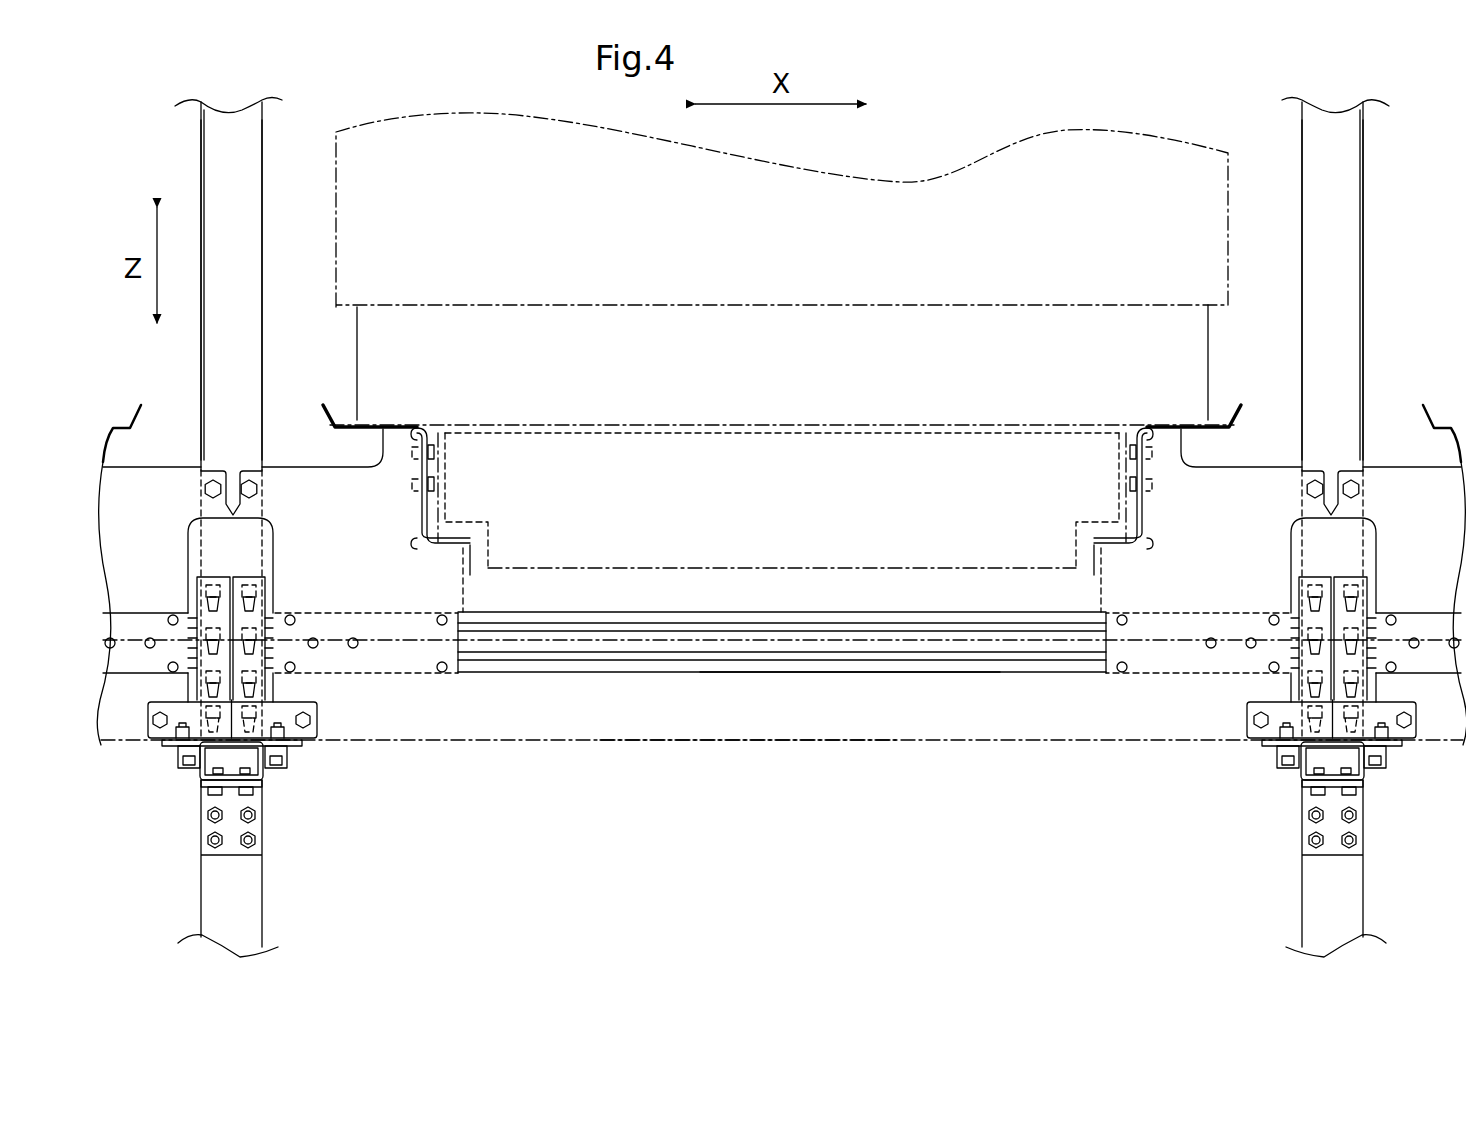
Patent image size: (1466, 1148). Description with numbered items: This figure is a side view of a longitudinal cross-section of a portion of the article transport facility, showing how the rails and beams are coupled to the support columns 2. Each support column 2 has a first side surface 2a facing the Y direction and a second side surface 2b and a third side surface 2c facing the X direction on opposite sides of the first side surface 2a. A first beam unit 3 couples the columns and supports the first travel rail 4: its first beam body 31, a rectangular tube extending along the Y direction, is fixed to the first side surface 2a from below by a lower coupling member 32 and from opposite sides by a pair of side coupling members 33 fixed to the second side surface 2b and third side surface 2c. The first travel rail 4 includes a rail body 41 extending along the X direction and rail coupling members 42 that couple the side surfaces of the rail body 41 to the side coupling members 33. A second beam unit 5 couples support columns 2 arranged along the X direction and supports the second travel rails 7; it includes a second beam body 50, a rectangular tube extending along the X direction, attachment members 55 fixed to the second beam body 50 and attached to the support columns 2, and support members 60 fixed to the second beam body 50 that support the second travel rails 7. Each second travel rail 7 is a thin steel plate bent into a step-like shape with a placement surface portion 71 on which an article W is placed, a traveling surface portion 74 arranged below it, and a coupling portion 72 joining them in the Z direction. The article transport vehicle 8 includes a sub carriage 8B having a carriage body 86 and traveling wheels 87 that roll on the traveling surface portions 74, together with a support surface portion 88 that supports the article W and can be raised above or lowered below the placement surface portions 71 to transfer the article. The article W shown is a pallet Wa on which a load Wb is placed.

The support column 2 is at (198, 175).
The first side surface 2a is at (232, 210).
The second side surface 2b is at (262, 335).
The third side surface 2c is at (201, 325).
The first beam unit 3 is at (277, 789).
The first travel rail 4 is at (622, 745).
The second beam unit 5 is at (880, 675).
The second travel rail 7 is at (347, 420).
The article transport vehicle 8 is at (782, 450).
The sub carriage 8B is at (782, 450).
The first beam body 31 is at (215, 795).
The lower coupling member 32 is at (237, 853).
The side coupling member 33 is at (200, 765).
The rail body 41 is at (760, 742).
The rail coupling member 42 is at (317, 712).
The second beam body 50 is at (668, 648).
The attachment member 55 is at (243, 577).
The support member 60 is at (148, 483).
The placement surface portion 71 is at (373, 426).
The coupling portion 72 is at (423, 498).
The traveling surface portion 74 is at (450, 543).
The carriage body 86 is at (815, 480).
The traveling wheel 87 is at (440, 432).
The support surface portion 88 is at (727, 432).
The article W is at (1422, 245).
The pallet Wa is at (1208, 318).
The load Wb is at (1228, 250).